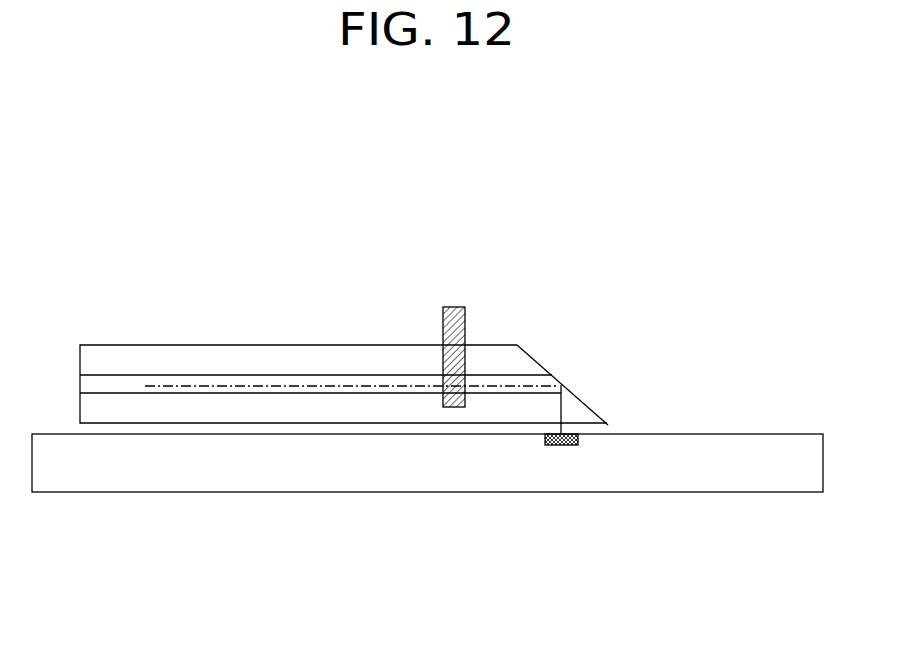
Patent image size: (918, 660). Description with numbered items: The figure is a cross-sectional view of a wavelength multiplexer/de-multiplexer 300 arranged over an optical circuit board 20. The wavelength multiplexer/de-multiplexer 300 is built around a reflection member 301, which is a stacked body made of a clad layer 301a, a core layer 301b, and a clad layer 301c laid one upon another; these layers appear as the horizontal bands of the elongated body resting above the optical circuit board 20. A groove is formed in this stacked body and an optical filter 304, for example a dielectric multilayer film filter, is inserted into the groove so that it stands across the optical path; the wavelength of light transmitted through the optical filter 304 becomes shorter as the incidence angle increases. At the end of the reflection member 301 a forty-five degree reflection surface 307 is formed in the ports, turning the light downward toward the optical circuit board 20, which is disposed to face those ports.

The optical circuit board 20 is at (662, 475).
The wavelength multiplexer/de-multiplexer 300 is at (378, 291).
The reflection member 301 is at (343, 472).
The clad layer 301a is at (110, 550).
The core layer 301b is at (223, 392).
The clad layer 301c is at (145, 363).
The optical filter 304 is at (463, 327).
The 45° reflection surface 307 is at (530, 355).